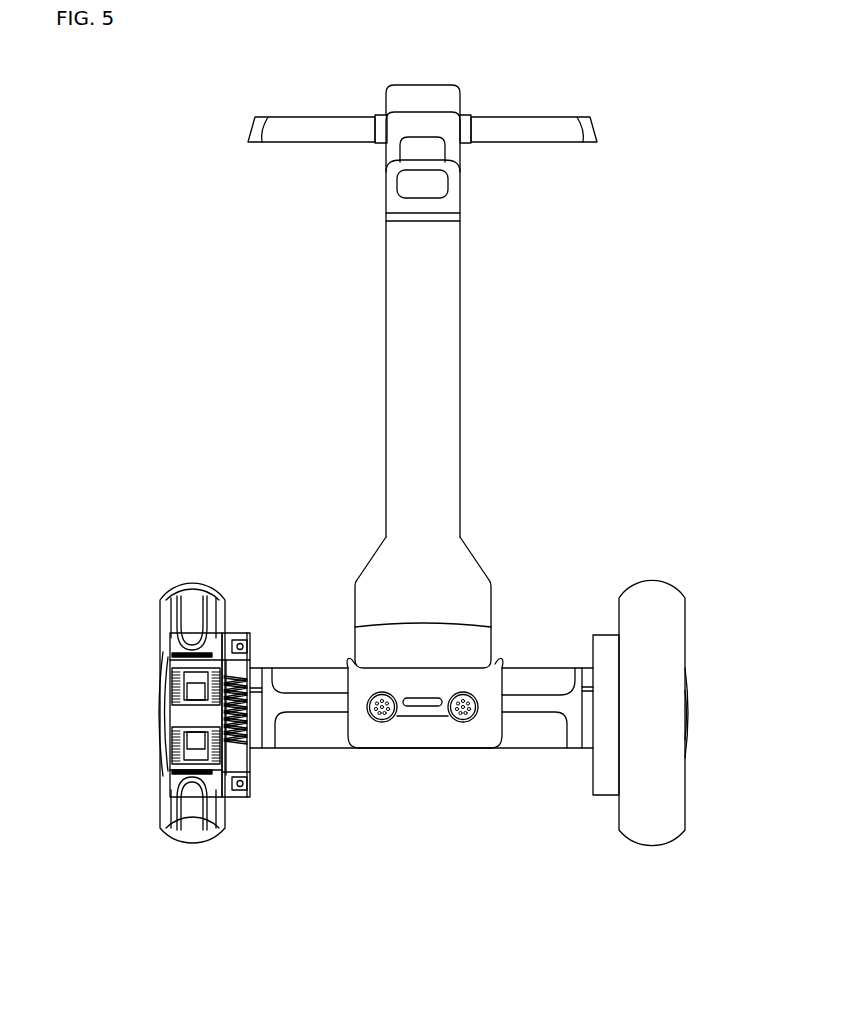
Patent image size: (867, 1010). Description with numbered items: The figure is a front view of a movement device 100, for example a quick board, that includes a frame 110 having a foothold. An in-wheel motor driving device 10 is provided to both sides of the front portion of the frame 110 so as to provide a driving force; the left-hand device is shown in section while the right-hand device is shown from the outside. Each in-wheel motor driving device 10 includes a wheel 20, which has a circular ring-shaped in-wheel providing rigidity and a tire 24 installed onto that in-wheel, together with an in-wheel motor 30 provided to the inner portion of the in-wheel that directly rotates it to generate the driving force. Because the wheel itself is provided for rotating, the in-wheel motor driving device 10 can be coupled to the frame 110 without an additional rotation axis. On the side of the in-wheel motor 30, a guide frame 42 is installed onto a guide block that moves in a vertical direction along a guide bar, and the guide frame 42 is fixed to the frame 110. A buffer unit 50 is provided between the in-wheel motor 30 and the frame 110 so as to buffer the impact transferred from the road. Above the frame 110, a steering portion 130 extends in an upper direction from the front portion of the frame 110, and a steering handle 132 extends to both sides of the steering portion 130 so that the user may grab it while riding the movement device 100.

The movement device 100 is at (256, 52).
The in-wheel motor driving device 10 is at (676, 578).
The wheel 20 is at (185, 856).
The tire 24 is at (212, 843).
The in-wheel motor 30 is at (168, 656).
The guide frame 42 is at (257, 742).
The buffer unit 50 is at (246, 758).
The frame 110 is at (416, 750).
The steering portion 130 is at (413, 378).
The steering handle 132 is at (302, 137).